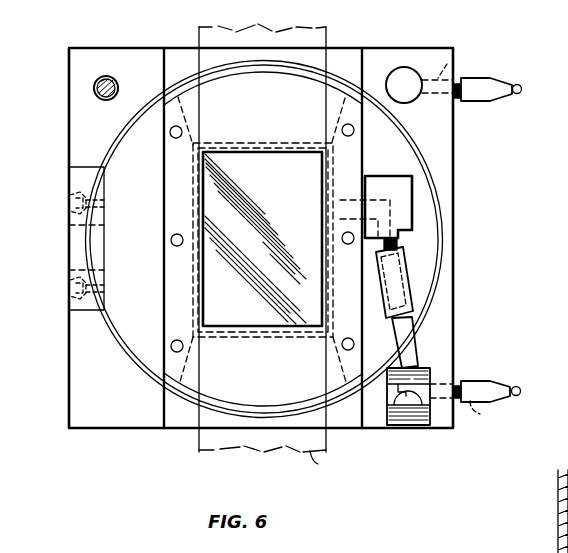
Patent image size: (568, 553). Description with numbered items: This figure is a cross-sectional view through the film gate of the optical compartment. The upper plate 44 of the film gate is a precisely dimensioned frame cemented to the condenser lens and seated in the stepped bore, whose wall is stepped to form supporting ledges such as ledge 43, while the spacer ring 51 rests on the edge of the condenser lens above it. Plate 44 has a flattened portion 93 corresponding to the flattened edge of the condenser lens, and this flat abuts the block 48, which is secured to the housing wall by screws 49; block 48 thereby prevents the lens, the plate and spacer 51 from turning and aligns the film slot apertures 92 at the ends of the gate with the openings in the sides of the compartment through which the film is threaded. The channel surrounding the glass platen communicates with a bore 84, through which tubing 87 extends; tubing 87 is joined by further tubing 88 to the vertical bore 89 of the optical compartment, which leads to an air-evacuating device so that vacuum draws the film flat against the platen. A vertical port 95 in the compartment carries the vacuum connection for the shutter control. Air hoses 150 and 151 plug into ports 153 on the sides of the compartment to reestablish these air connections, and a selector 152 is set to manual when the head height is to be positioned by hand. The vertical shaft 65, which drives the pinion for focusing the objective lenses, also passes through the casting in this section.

The supporting ledge 43 is at (408, 157).
The upper plate 44 is at (452, 313).
The block 48 is at (75, 244).
The screws 49 is at (70, 203).
The spacer ring 51 is at (440, 218).
The vertical shaft 65 is at (94, 87).
The bore 84 is at (358, 163).
The tubing 87 is at (400, 242).
The further tubing 88 is at (420, 355).
The vertical bore 89 is at (400, 426).
The film slot apertures 92 is at (305, 85).
The flattened portion 93 is at (108, 240).
The vertical port 95 is at (404, 68).
The air hose 150 is at (512, 386).
The air hose 151 is at (518, 82).
The selector 152 is at (455, 413).
The port 153 is at (452, 62).